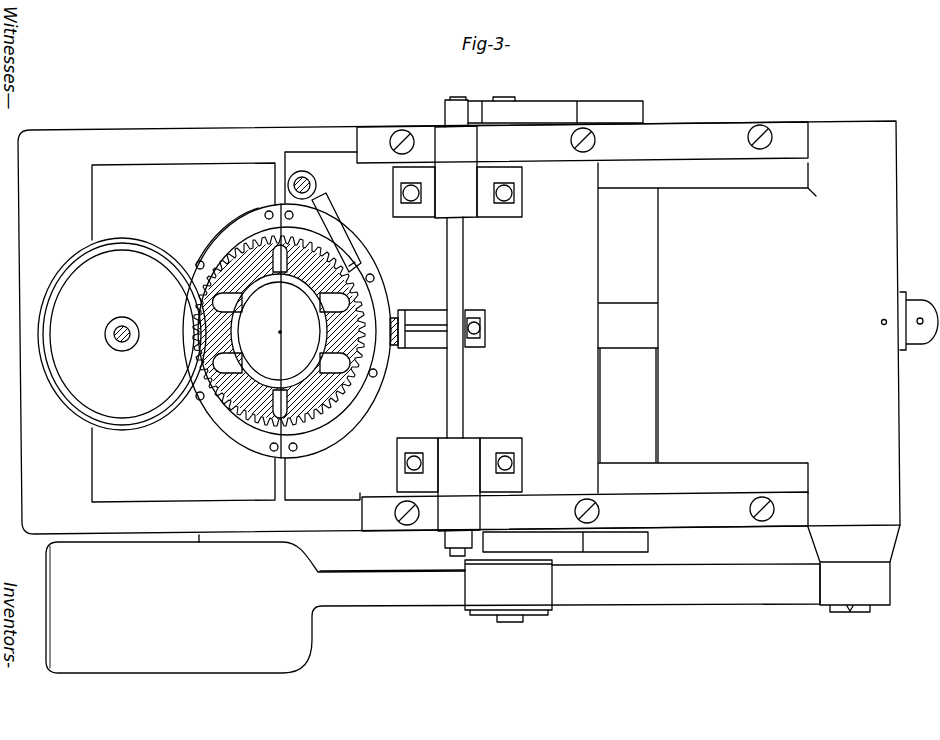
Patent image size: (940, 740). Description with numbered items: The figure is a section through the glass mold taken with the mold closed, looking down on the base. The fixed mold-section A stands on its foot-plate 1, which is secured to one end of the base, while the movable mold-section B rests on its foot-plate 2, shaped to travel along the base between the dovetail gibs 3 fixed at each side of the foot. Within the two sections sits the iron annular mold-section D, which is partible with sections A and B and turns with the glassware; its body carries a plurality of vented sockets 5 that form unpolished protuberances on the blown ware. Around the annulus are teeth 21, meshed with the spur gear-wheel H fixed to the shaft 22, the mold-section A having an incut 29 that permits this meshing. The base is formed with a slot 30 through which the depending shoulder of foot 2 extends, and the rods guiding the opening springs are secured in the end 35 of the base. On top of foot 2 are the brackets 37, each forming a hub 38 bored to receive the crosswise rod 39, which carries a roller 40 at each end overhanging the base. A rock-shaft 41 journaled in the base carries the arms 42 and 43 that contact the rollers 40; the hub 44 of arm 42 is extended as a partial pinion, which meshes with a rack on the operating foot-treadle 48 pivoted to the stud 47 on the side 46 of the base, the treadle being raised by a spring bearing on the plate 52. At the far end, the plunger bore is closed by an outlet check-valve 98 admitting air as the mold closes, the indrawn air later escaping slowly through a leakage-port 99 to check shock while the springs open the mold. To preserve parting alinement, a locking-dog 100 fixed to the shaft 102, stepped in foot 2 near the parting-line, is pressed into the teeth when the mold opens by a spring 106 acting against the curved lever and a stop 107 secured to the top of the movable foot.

The foot-plate 1 is at (176, 176).
The foot-plate 2 is at (321, 161).
The dovetail gibs 3 is at (688, 132).
The vented sockets 5 is at (285, 290).
The teeth 21 is at (360, 308).
The shaft 22 is at (124, 344).
The incut 29 is at (194, 277).
The slot 30 is at (643, 248).
The end of base 35 is at (667, 390).
The brackets 37 is at (490, 213).
The hub 38 is at (468, 146).
The rod 39 is at (460, 279).
The roller 40 is at (447, 112).
The rock-shaft 41 is at (507, 97).
The arm 42 is at (648, 542).
The arm 43 is at (607, 110).
The hub 44 is at (503, 553).
The side of base 46 is at (375, 533).
The stud 47 is at (820, 543).
The operating foot-treadle 48 is at (375, 600).
The plate 52 is at (223, 538).
The outlet check-valve 98 is at (910, 351).
The leakage-port 99 is at (883, 324).
The locking-dog 100 is at (335, 218).
The shaft 102 is at (316, 185).
The spring 106 is at (397, 318).
The stop 107 is at (427, 349).
The mold-section A is at (222, 233).
The mold-section B is at (372, 394).
The mold-section D is at (258, 300).
The spur gear-wheel H is at (80, 400).